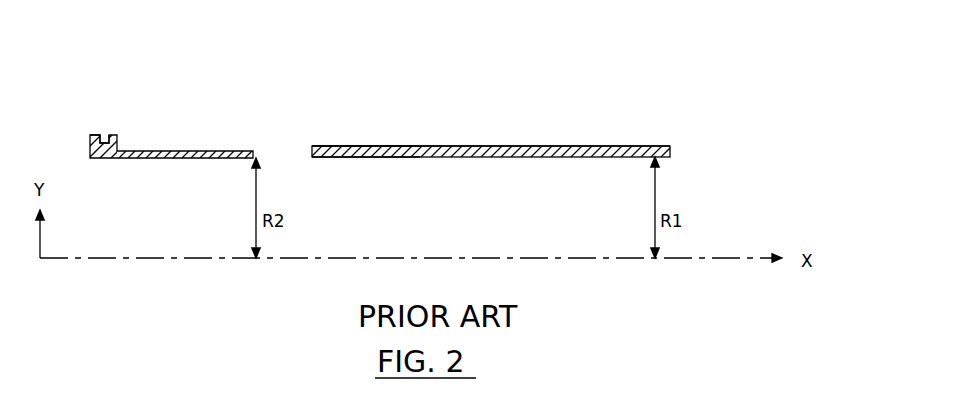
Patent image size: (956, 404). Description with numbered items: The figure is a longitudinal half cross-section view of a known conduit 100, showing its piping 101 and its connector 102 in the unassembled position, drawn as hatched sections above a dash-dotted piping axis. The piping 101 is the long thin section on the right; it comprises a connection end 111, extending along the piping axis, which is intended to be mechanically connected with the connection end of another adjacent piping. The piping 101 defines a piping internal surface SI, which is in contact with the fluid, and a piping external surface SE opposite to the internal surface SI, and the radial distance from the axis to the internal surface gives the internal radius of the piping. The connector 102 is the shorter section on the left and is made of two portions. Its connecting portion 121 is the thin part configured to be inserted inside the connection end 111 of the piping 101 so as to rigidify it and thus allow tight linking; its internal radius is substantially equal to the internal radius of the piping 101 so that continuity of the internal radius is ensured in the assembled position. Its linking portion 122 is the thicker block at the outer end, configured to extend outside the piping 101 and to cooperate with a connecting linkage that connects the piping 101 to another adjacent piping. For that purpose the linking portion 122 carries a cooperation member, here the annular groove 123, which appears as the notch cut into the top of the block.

The conduit 100 is at (501, 128).
The piping 101 is at (538, 128).
The connection end 111 is at (332, 146).
The piping external surface SE is at (370, 146).
The piping internal surface SI is at (372, 157).
The connector 102 is at (160, 136).
The connecting portion 121 is at (247, 172).
The linking portion 122 is at (119, 172).
The annular groove 123 is at (101, 133).